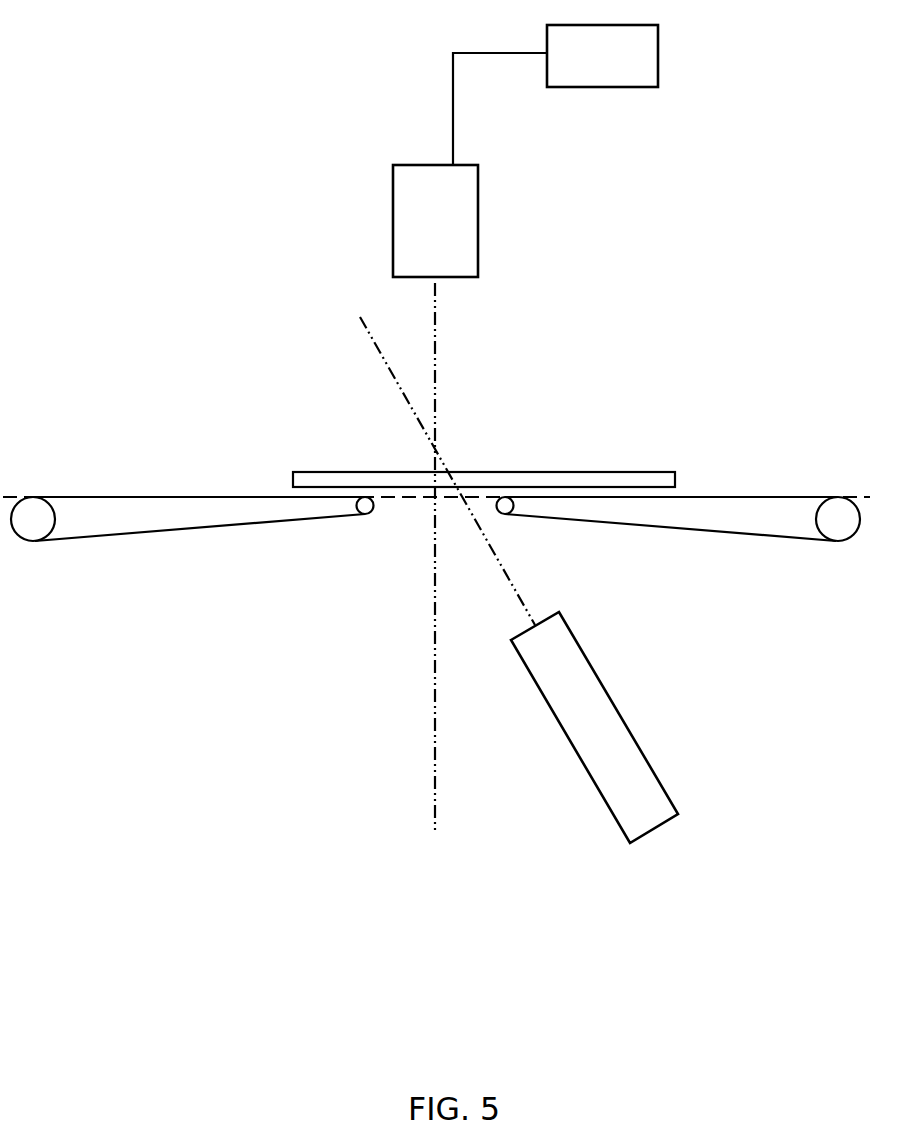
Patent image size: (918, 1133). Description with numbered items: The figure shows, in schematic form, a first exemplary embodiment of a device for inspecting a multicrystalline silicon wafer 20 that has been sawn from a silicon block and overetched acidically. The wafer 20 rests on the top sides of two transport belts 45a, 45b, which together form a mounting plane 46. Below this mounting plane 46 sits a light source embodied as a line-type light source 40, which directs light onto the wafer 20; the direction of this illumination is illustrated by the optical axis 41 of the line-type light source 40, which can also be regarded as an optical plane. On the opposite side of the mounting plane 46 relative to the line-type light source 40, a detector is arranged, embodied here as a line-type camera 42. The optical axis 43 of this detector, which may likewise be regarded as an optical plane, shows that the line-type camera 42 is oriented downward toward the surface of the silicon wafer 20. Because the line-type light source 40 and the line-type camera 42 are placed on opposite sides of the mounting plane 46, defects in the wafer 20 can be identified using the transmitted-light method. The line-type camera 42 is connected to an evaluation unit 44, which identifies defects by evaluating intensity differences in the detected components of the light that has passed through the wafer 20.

The evaluation unit 44 is at (633, 62).
The line-type camera 42 is at (450, 193).
The optical axis of the detector 43 is at (437, 306).
The optical axis of the line-type light source 41 is at (388, 368).
The multicrystalline silicon wafer 20 is at (605, 480).
The mounting plane 46 is at (395, 497).
The transport belt 45a is at (152, 497).
The transport belt 45b is at (742, 496).
The line-type light source 40 is at (605, 750).